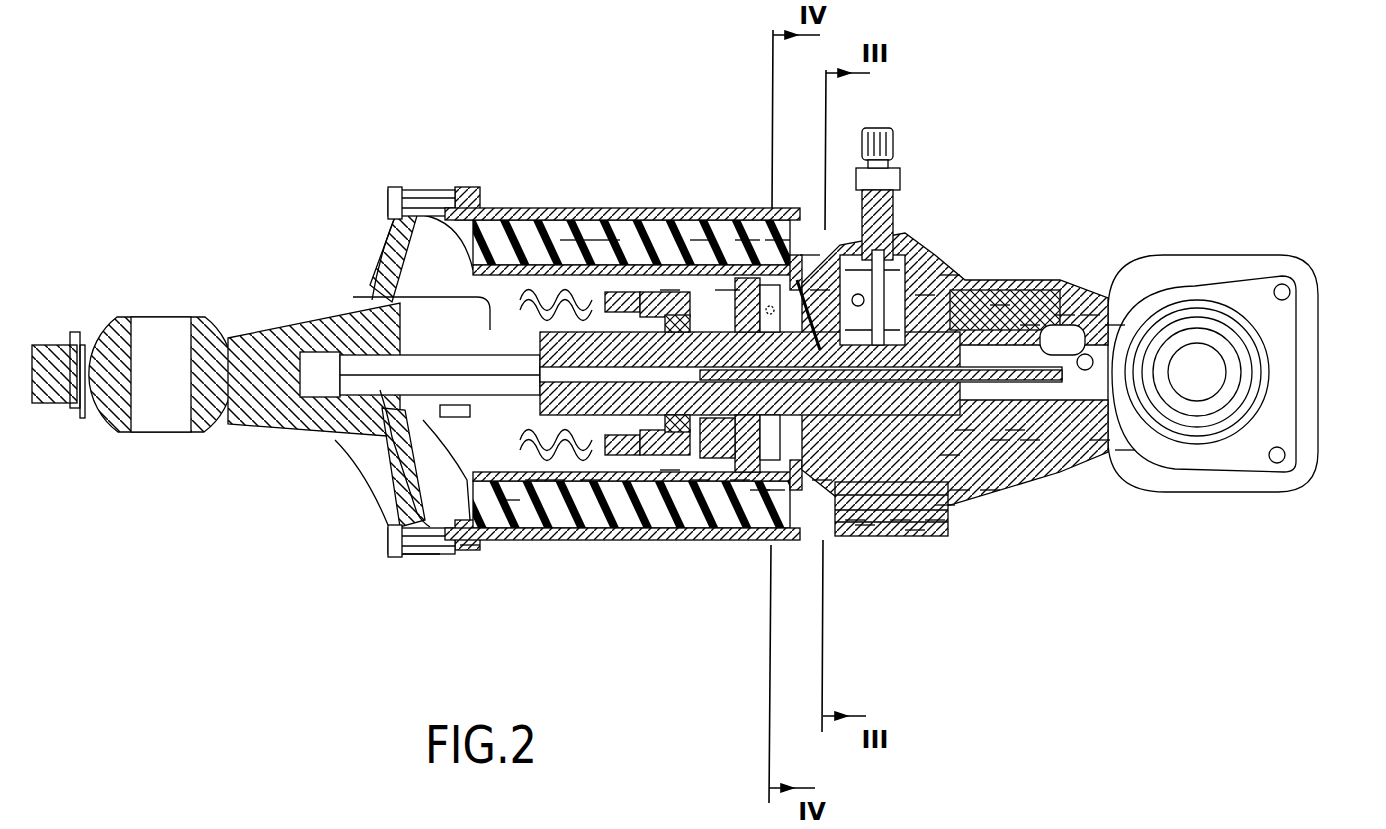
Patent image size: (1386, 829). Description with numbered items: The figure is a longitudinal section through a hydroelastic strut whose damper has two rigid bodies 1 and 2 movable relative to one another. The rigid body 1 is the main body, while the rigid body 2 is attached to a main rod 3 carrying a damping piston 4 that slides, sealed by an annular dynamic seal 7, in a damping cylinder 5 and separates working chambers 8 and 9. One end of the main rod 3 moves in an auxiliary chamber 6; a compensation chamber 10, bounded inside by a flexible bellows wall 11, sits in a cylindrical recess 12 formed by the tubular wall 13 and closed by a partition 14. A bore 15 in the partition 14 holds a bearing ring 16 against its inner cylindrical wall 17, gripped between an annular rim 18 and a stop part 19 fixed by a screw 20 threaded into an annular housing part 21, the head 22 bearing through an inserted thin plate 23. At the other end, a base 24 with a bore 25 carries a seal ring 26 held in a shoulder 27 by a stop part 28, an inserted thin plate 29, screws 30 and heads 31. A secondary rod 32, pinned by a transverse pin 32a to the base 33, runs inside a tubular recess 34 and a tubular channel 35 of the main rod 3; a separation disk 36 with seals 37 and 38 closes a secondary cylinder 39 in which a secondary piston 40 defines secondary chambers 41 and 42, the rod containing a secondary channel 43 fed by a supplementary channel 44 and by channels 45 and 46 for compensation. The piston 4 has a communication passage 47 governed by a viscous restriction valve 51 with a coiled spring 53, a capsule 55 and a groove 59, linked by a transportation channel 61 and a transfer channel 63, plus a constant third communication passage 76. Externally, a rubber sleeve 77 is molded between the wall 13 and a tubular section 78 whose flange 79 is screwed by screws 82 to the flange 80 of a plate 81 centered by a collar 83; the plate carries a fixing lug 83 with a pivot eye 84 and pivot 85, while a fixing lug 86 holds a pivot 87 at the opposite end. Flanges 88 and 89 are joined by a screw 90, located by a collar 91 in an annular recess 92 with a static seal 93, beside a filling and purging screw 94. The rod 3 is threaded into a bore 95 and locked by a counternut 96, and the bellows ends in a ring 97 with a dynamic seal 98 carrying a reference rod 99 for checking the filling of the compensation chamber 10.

The rigid body 1 is at (960, 250).
The rigid body 2 is at (288, 322).
The main rod 3 is at (645, 500).
The damping piston 4 is at (822, 480).
The damping cylinder 5 is at (700, 481).
The auxiliary chamber 6 is at (1100, 445).
The annular dynamic seal 7 is at (775, 250).
The working chamber 8 is at (915, 530).
The working chamber 9 is at (725, 300).
The compensation chamber 10 is at (580, 472).
The flexible bellows wall 11 is at (515, 425).
The cylindrical recess 12 is at (478, 460).
The tubular wall 13 is at (535, 481).
The partition 14 is at (620, 481).
The bore 15 is at (670, 472).
The ring 16 is at (640, 255).
The inner cylindrical wall 17 is at (652, 255).
The annular rim 18 is at (610, 325).
The stop part 19 is at (662, 260).
The screw 20 is at (605, 240).
The annular housing part 21 is at (575, 240).
The head 22 is at (700, 245).
The inserted thin plate 23 is at (670, 300).
The base 24 is at (960, 300).
The bore 25 is at (950, 280).
The ring 26 is at (1000, 310).
The shoulder 27 is at (1000, 440).
The stop part 28 is at (960, 490).
The inserted thin plate 29 is at (950, 455).
The screw 30 is at (965, 430).
The head 31 is at (990, 490).
The secondary rod 32 is at (1060, 440).
The transverse pin 32a is at (1115, 330).
The base 33 is at (1090, 320).
The tubular recess 34 is at (1065, 320).
The tubular channel 35 is at (590, 481).
The separation disk 36 is at (1030, 440).
The annular leaktight seal 37 is at (1015, 430).
The annular leaktight seal 38 is at (1030, 330).
The secondary cylinder 39 is at (855, 520).
The secondary piston 40 is at (865, 525).
The secondary chamber 41 is at (1010, 330).
The secondary chamber 42 is at (845, 250).
The secondary channel 43 is at (720, 472).
The supplementary channel 44 is at (925, 300).
The channel 45 is at (555, 481).
The channel 46 is at (1125, 455).
The communication passage 47 is at (748, 330).
The viscous restriction valve 51 is at (745, 245).
The coiled spring 53 is at (740, 480).
The capsule 55 is at (760, 490).
The groove 59 is at (767, 290).
The transportation channel 61 is at (808, 260).
The transfer channel 63 is at (820, 300).
The third communication passage 76 is at (775, 490).
The rubber sleeve 77 is at (510, 500).
The tubular section 78 is at (470, 545).
The flange 79 is at (420, 560).
The flange 80 is at (395, 548).
The plate 81 is at (403, 240).
The screw 82 is at (410, 198).
The inner cylindrical collar 83 is at (55, 345).
The pivot eye 84 is at (92, 418).
The pivot 85 is at (203, 330).
The fixing lug 86 is at (1253, 478).
The pivot 87 is at (1275, 350).
The flange 88 is at (843, 505).
The complementary flange 89 is at (935, 520).
The screw 90 is at (945, 505).
The collar 91 is at (900, 235).
The annular recess 92 is at (880, 210).
The static annular leaktight seal 93 is at (900, 520).
The filling and purging screw 94 is at (868, 140).
The bore 95 is at (338, 340).
The counternut 96 is at (360, 430).
The ring 97 is at (455, 415).
The dynamic seal 98 is at (480, 275).
The reference rod 99 is at (405, 298).